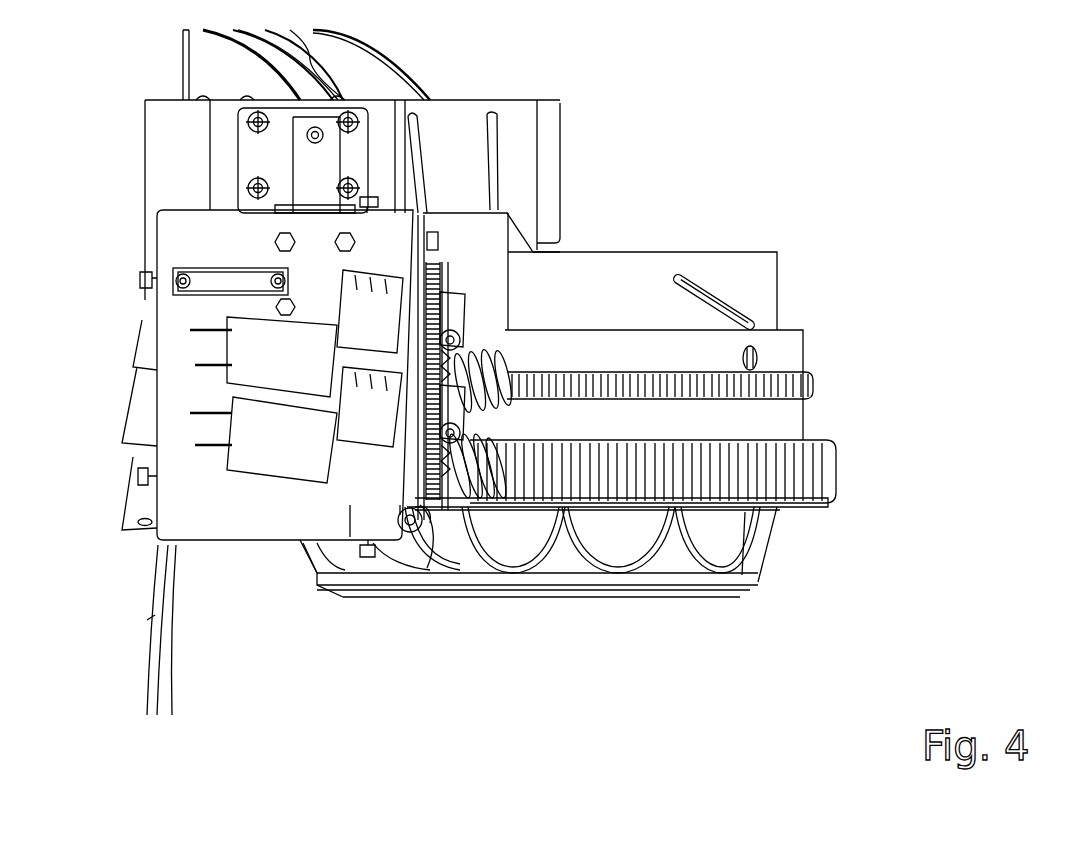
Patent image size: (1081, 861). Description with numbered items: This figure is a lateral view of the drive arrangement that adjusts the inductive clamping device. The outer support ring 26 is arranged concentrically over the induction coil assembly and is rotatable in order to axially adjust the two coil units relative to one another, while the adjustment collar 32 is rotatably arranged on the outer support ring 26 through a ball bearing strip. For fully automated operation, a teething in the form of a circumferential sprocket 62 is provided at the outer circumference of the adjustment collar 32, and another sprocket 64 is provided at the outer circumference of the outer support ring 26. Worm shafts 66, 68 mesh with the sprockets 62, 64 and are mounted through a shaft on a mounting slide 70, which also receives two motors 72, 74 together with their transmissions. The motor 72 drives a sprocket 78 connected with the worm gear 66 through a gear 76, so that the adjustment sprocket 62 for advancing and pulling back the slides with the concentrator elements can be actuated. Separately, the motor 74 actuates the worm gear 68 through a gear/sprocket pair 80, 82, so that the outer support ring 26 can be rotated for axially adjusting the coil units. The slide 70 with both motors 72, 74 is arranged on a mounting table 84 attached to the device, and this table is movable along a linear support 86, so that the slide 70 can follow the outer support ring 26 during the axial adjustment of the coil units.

The outer support ring 26 is at (785, 352).
The adjustment collar 32 is at (760, 550).
The circumferential sprocket 62 is at (835, 470).
The sprocket 64 is at (815, 387).
The worm shaft 66 is at (490, 497).
The worm shaft 68 is at (505, 365).
The mounting slide 70 is at (382, 520).
The motor 72 is at (358, 418).
The motor 74 is at (363, 327).
The gear 76 is at (445, 410).
The sprocket 78 is at (437, 503).
The gear 80 is at (440, 257).
The sprocket 82 is at (467, 347).
The mounting table 84 is at (450, 130).
The linear support 86 is at (313, 167).